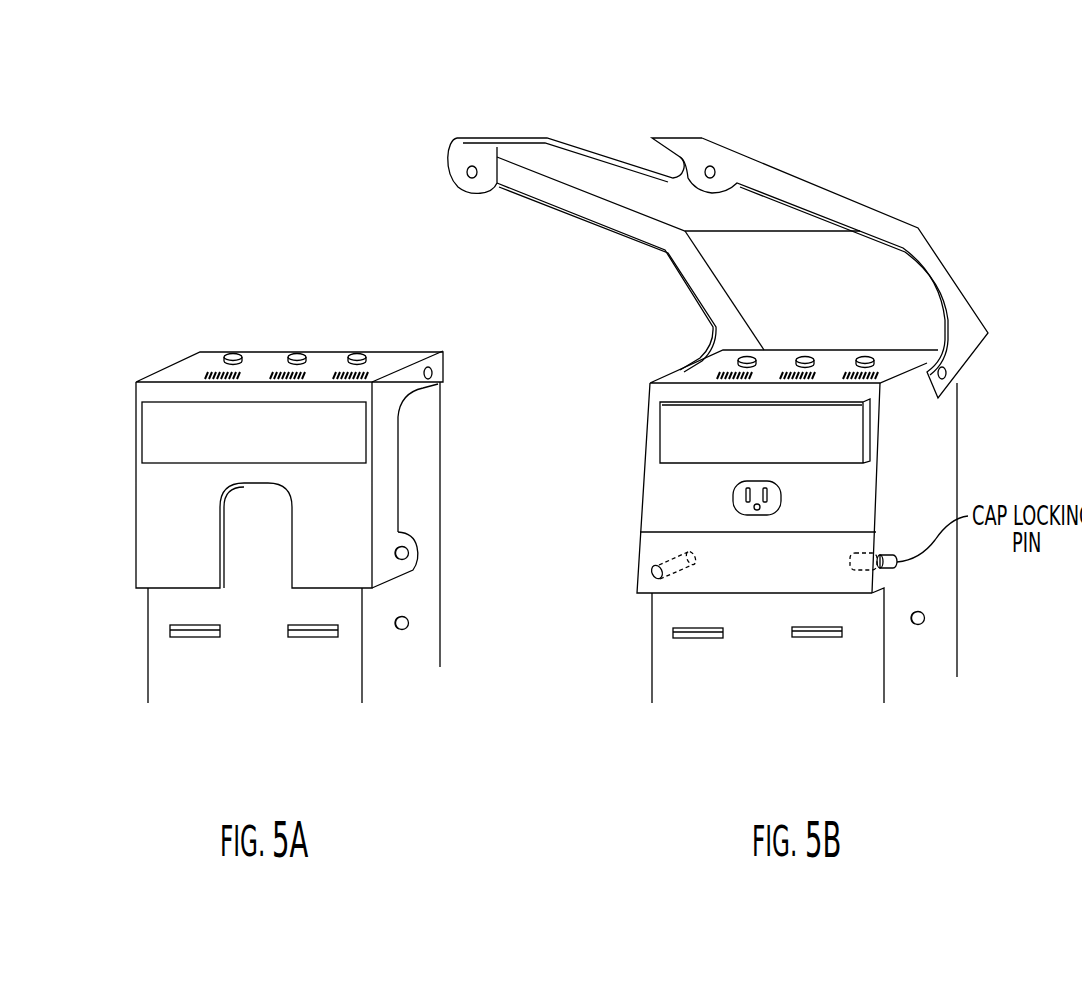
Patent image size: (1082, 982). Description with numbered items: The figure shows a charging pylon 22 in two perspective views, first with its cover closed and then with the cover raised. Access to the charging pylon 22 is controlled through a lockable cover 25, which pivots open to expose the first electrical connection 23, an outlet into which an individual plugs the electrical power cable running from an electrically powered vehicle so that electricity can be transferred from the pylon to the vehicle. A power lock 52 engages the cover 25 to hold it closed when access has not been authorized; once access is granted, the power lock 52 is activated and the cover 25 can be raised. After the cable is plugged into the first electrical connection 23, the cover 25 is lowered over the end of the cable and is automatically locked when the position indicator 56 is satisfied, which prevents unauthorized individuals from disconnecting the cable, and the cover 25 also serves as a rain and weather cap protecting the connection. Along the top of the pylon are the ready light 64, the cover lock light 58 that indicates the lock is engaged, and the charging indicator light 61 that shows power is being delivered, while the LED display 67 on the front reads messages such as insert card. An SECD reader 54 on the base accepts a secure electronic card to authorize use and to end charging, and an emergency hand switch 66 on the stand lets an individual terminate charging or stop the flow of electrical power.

In FIG. 5A, the charging pylon 22 is at (148, 618).
In FIG. 5B, the first electrical connection 23 is at (733, 498).
In FIG. 5A, the lockable cover 25 is at (138, 500).
In FIG. 5B, the lockable cover 25 is at (953, 303).
In FIG. 5A, the power lock 52 is at (417, 553).
In FIG. 5A, the SECD reader 54 is at (327, 637).
In FIG. 5B, the position indicator 56 is at (653, 578).
In FIG. 5A, the cover lock light 58 is at (297, 352).
In FIG. 5A, the charging indicator light 61 is at (357, 351).
In FIG. 5A, the ready light 64 is at (233, 352).
In FIG. 5A, the emergency hand switch 66 is at (410, 623).
In FIG. 5B, the emergency hand switch 66 is at (930, 618).
In FIG. 5A, the LED display 67 is at (372, 437).